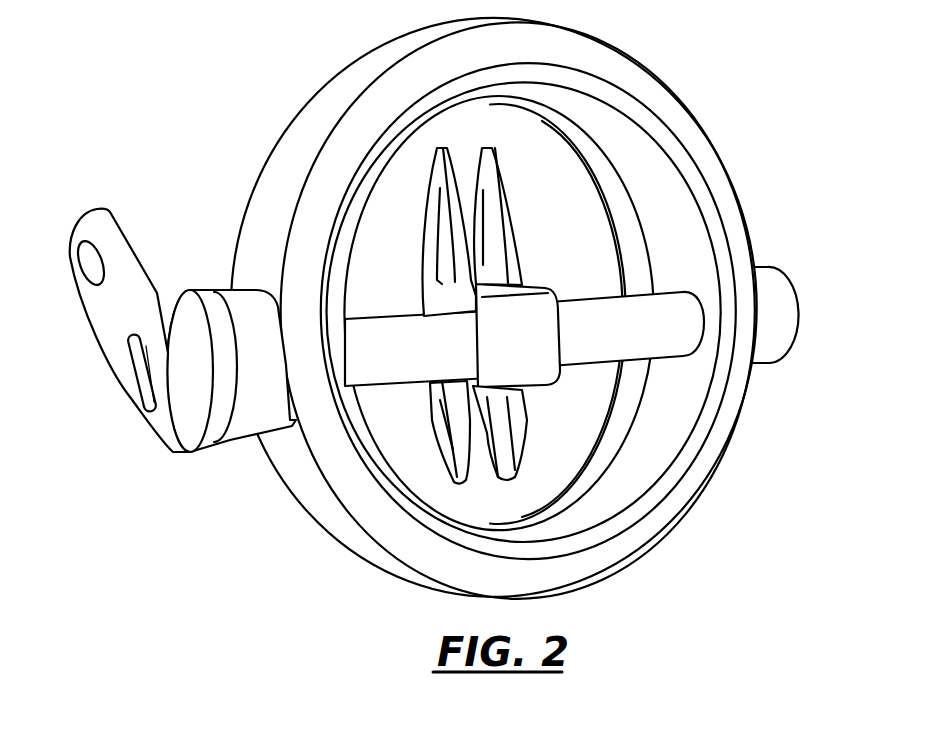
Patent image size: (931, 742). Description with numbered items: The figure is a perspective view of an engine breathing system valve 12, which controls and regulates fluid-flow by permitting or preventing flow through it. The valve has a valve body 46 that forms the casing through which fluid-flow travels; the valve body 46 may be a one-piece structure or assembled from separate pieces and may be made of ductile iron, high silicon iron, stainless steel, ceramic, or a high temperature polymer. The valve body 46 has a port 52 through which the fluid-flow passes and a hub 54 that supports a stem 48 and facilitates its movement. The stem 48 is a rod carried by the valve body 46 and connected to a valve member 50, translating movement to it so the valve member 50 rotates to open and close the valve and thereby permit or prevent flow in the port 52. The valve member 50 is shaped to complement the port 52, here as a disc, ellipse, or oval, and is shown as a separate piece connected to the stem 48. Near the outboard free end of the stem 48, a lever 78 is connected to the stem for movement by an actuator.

The engine breathing system valve 12 is at (734, 114).
The valve body 46 is at (322, 88).
The stem 48 is at (587, 303).
The valve member 50 is at (398, 284).
The port 52 is at (668, 422).
The hub 54 is at (241, 418).
The lever 78 is at (117, 285).